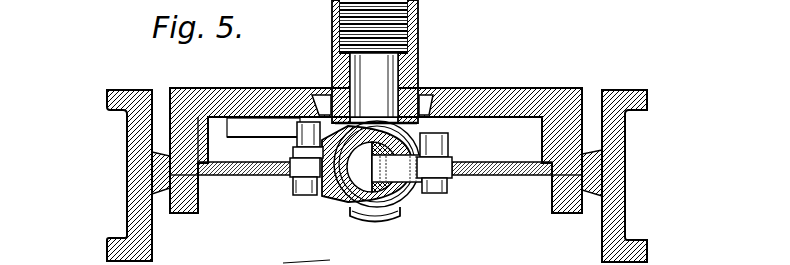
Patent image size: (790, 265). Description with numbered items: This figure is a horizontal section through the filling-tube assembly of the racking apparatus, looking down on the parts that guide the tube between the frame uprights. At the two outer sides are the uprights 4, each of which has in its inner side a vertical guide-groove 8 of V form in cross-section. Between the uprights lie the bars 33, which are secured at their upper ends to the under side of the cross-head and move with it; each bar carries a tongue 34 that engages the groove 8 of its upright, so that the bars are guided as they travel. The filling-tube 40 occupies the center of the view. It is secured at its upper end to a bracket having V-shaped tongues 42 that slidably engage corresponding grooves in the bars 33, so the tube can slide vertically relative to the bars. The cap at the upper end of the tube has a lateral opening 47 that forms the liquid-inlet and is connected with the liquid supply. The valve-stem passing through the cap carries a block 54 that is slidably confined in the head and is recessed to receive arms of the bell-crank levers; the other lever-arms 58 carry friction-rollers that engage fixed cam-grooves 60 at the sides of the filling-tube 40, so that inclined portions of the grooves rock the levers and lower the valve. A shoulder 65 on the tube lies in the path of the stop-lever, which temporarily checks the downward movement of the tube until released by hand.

The upright 4 is at (125, 168).
The vertical guide-groove 8 is at (150, 173).
The bar 33 is at (262, 80).
The tongue 34 is at (196, 181).
The filling-tube 40 is at (402, 187).
The V-shaped tongue 42 is at (320, 92).
The lateral opening 47 is at (375, 61).
The block 54 is at (405, 259).
The lever-arm 58 is at (300, 180).
The cam-groove 60 is at (468, 177).
The shoulder 65 is at (377, 222).